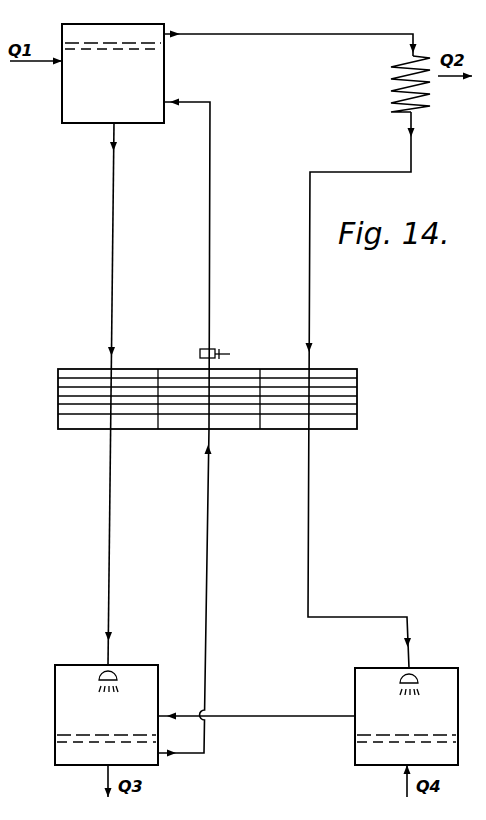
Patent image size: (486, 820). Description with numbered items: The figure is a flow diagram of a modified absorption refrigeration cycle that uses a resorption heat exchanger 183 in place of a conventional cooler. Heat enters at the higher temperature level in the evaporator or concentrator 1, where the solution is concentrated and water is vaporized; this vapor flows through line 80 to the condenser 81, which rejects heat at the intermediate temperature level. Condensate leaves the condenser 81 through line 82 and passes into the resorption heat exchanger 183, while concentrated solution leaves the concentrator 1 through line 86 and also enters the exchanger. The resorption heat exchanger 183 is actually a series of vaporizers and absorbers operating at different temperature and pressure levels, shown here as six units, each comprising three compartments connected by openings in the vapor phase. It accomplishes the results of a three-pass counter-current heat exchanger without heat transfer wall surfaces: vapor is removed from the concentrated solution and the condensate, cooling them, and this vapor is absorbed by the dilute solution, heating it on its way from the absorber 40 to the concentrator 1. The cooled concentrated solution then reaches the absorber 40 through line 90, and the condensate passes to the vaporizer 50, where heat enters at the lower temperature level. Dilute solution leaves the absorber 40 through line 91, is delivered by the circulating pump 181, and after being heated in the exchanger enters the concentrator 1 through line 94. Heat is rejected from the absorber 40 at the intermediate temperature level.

The evaporator or concentrator 1 is at (62, 80).
The absorber 40 is at (143, 665).
The vaporizer 50 is at (441, 668).
The line 80 is at (247, 35).
The condenser 81 is at (428, 108).
The line 82 is at (378, 173).
The line 86 is at (110, 141).
The line 90 is at (110, 516).
The line 91 is at (206, 651).
The line 94 is at (210, 162).
The circulating pump 181 is at (200, 353).
The resorption heat exchanger 183 is at (325, 369).